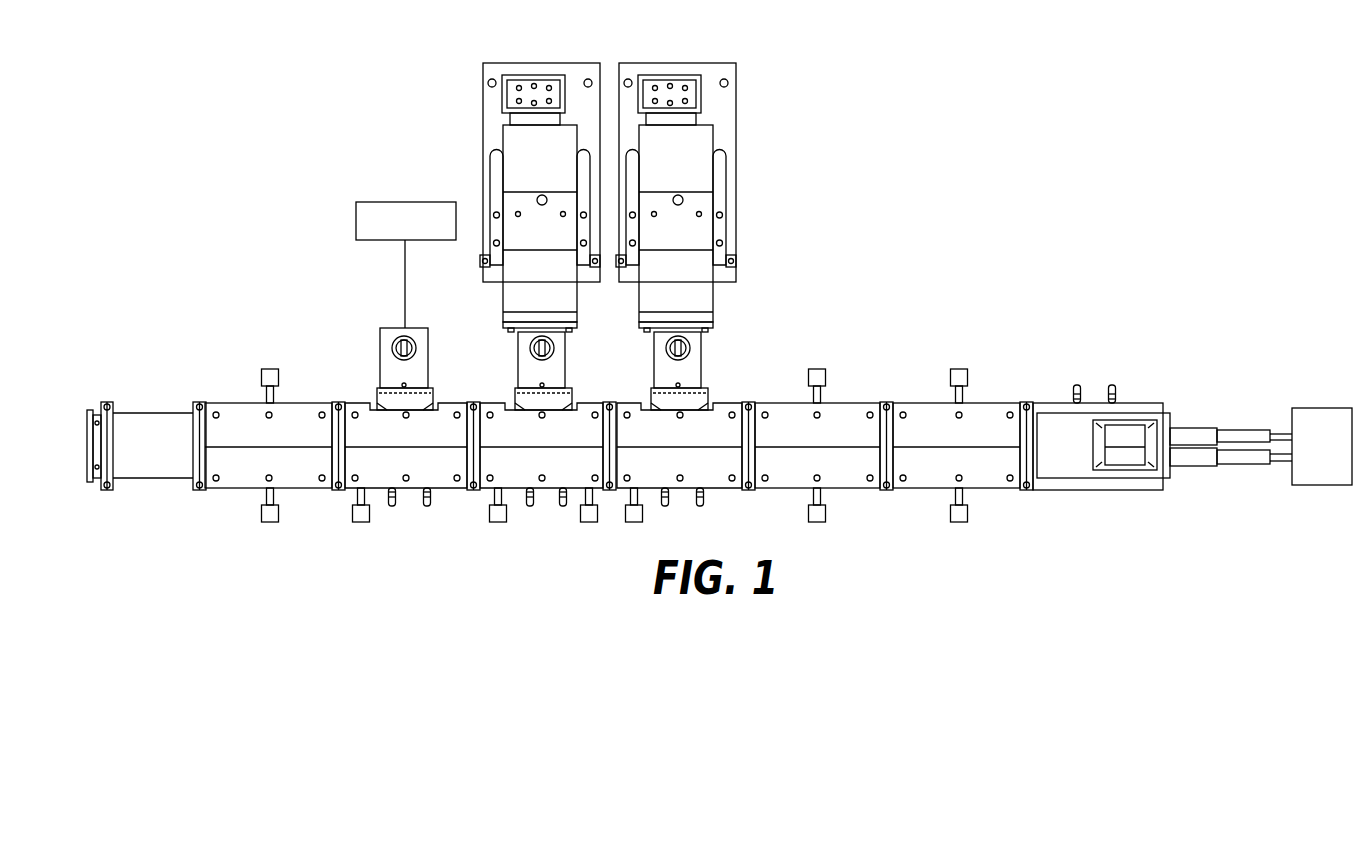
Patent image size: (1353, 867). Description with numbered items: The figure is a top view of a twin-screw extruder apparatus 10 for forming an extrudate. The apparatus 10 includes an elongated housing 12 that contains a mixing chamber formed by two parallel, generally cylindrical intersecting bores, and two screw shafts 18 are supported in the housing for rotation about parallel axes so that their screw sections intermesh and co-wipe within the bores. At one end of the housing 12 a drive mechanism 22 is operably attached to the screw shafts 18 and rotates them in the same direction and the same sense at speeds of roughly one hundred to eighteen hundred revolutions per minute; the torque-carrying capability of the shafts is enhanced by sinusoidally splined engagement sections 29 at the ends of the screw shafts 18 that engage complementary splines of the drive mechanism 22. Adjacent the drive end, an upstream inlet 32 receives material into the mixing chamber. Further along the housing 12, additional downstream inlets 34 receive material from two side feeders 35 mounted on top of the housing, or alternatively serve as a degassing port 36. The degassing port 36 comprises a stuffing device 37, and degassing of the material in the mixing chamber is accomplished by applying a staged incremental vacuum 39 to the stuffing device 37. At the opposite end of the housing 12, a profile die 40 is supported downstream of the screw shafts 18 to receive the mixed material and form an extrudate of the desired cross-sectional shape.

The apparatus for forming an extrudate 10 is at (1140, 322).
The housing 12 is at (245, 462).
The screw shafts 18 is at (1248, 457).
The drive mechanism 22 is at (1337, 465).
The sinusoidally splined engagement sections 29 is at (1180, 457).
The upstream inlet 32 is at (1130, 430).
The downstream inlets 34 is at (565, 405).
The side feeders 35 is at (560, 155).
The degassing port 36 is at (420, 405).
The stuffing device 37 is at (556, 367).
The staged incremental vacuum 39 is at (405, 201).
The profile die 40 is at (93, 412).